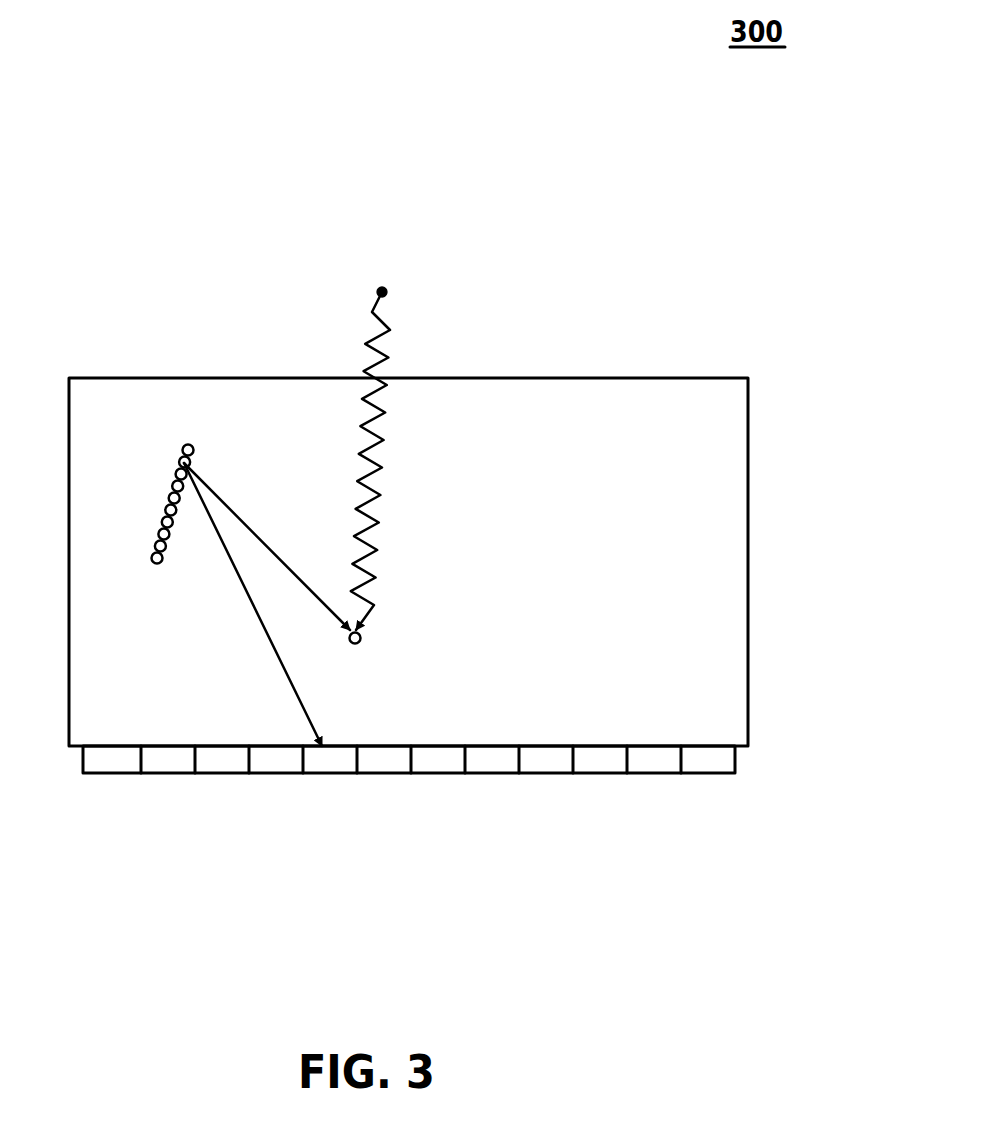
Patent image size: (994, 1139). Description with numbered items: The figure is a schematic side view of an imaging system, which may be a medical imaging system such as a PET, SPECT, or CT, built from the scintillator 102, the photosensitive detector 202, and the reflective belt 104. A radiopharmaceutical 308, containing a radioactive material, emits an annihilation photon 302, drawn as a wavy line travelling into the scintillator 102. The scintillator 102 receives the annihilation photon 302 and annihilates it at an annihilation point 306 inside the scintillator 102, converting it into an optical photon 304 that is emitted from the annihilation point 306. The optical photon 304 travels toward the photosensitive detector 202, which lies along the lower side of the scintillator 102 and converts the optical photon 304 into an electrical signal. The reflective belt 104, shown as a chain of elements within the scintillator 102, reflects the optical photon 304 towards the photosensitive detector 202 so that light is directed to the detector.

The scintillator 102 is at (748, 378).
The reflective belt 104 is at (155, 549).
The photosensitive detector 202 is at (378, 775).
The annihilation photon 302 is at (383, 443).
The optical photon 304 is at (267, 637).
The annihilation point 306 is at (361, 640).
The radiopharmaceutical 308 is at (382, 292).